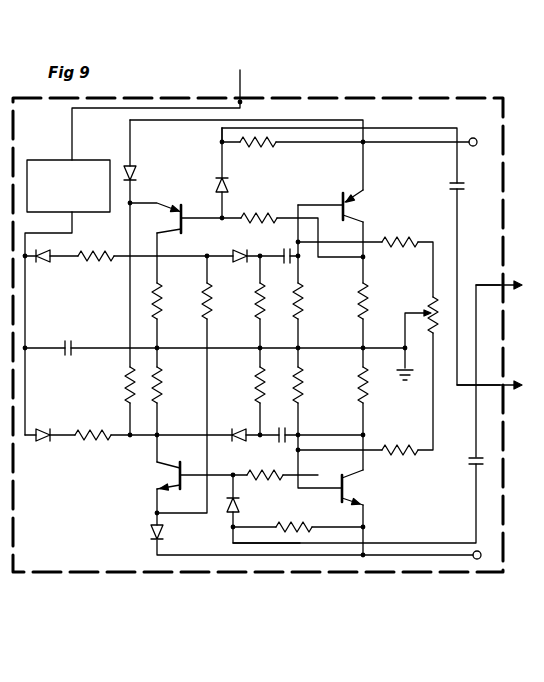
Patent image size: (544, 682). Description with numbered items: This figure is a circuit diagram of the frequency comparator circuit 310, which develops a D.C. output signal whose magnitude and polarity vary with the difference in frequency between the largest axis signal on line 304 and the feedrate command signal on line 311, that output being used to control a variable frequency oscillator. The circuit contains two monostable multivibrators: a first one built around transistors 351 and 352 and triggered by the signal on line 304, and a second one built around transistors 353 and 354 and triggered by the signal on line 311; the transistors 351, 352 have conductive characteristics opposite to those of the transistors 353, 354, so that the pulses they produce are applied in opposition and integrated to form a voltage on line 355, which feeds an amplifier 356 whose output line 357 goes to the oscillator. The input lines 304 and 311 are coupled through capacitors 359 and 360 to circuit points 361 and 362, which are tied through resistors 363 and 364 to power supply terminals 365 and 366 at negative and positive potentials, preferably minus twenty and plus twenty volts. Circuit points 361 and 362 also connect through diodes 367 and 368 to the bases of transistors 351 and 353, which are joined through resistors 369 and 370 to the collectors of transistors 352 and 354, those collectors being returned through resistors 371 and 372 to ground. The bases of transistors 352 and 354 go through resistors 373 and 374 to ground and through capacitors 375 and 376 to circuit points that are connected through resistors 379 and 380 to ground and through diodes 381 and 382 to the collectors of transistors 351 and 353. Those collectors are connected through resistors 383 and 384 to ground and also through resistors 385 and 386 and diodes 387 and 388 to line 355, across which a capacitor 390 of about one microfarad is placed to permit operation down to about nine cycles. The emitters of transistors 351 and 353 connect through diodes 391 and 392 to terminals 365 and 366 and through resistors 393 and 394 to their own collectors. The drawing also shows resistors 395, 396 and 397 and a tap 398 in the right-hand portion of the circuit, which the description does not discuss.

The line 304 is at (525, 278).
The frequency comparator circuit 310 is at (388, 96).
The line 311 is at (525, 380).
The transistor 351 is at (176, 478).
The transistor 352 is at (348, 489).
The transistor 353 is at (177, 220).
The transistor 354 is at (347, 208).
The line 355 is at (25, 316).
The amplifier 356 is at (58, 160).
The output line 357 is at (120, 109).
The capacitor 359 is at (472, 466).
The capacitor 360 is at (460, 188).
The circuit point 361 is at (230, 528).
The circuit point 362 is at (220, 146).
The resistor 363 is at (290, 524).
The resistor 364 is at (260, 148).
The power supply terminal 365 is at (474, 559).
The power supply terminal 366 is at (470, 139).
The diode 367 is at (241, 505).
The diode 368 is at (229, 187).
The resistor 369 is at (263, 480).
The resistor 370 is at (250, 216).
The resistor 371 is at (366, 378).
The resistor 372 is at (368, 310).
The resistor 373 is at (302, 381).
The resistor 374 is at (303, 310).
The capacitor 375 is at (289, 442).
The capacitor 376 is at (288, 249).
The resistor 379 is at (256, 382).
The resistor 380 is at (265, 313).
The diode 381 is at (242, 442).
The diode 382 is at (240, 250).
The resistor 383 is at (160, 378).
The resistor 384 is at (162, 310).
The resistor 385 is at (84, 441).
The resistor 386 is at (86, 262).
The diode 387 is at (42, 443).
The diode 388 is at (42, 264).
The capacitor 390 is at (76, 344).
The diode 391 is at (150, 533).
The diode 392 is at (136, 174).
The resistor 393 is at (212, 310).
The resistor 394 is at (126, 384).
The resistor 395 is at (390, 448).
The resistor 396 is at (394, 249).
The resistor 397 is at (430, 300).
The potentiometer tap 398 is at (416, 345).